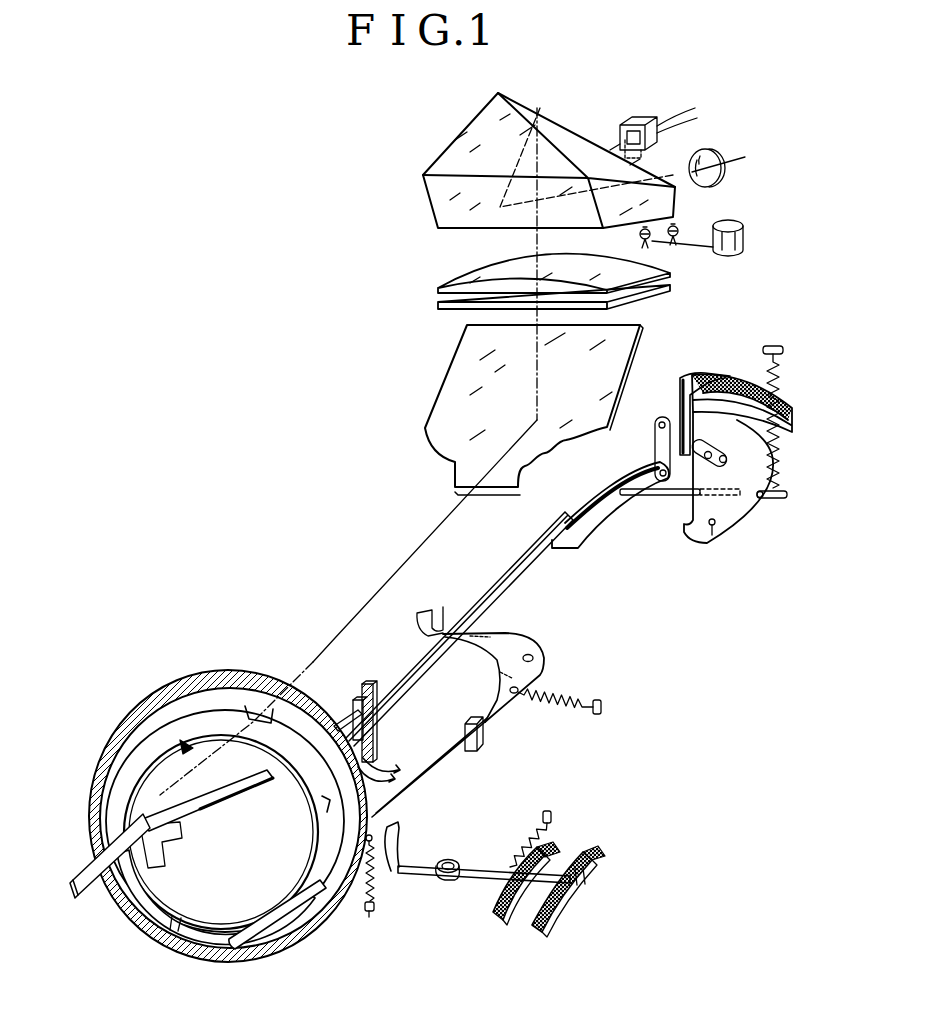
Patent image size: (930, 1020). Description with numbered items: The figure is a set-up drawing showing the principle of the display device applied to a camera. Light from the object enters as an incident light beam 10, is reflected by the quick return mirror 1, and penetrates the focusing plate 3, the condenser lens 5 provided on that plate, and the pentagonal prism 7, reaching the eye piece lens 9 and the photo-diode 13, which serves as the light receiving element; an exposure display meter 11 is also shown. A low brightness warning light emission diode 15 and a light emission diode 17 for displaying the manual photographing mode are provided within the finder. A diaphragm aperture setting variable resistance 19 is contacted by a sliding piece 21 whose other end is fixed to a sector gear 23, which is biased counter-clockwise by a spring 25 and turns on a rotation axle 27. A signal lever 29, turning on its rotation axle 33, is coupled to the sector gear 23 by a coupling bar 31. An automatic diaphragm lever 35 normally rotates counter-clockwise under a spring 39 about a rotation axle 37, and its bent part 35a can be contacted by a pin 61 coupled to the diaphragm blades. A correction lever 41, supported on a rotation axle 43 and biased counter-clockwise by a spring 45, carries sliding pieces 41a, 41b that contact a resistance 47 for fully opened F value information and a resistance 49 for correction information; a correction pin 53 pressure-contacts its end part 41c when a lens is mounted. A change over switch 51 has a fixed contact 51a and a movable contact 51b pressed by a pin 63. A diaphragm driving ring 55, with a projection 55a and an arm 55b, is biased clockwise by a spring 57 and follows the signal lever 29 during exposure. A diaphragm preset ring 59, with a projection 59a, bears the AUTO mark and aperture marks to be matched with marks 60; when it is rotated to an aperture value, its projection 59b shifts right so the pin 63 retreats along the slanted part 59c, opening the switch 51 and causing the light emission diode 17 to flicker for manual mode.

The quick return mirror 1 is at (455, 385).
The focusing plate 3 is at (438, 305).
The condenser lens 5 is at (438, 290).
The pentagonal prism 7 is at (438, 198).
The eye piece lens 9 is at (707, 150).
The incident light beam 10 is at (738, 158).
The exposure display meter 11 is at (735, 228).
The photo-diode 13 is at (621, 126).
The low brightness warning light emission diode 15 is at (678, 229).
The manual mode light emission diode 17 is at (650, 243).
The diaphragm aperture setting variable resistance 19 is at (738, 376).
The sliding piece 21 is at (693, 378).
The sector gear 23 is at (740, 505).
The spring 25 is at (778, 445).
The rotation axle 27 is at (712, 530).
The signal lever 29 is at (603, 512).
The coupling bar 31 is at (652, 496).
The rotation axle 33 is at (655, 427).
The automatic diaphragm lever 35 is at (507, 702).
The bent part 35a is at (483, 744).
The rotation axle 37 is at (529, 654).
The spring 39 is at (570, 696).
The correction lever 41 is at (479, 866).
The sliding piece 41a is at (510, 870).
The sliding piece 41b is at (585, 880).
The end part 41c is at (400, 838).
The rotation axle 43 is at (449, 858).
The spring 45 is at (524, 842).
The resistance 47 is at (556, 846).
The resistance 49 is at (592, 856).
The change over switch 51 is at (373, 758).
The fixed contact 51a is at (372, 688).
The movable contact 51b is at (358, 700).
The correction pin 53 is at (374, 858).
The diaphragm driving ring 55 is at (193, 690).
The projection 55a is at (268, 708).
The arm 55b is at (500, 585).
The spring 57 is at (366, 908).
The diaphragm preset ring 59 is at (322, 902).
The projection 59a is at (300, 812).
The projection 59b is at (165, 925).
The slanted part 59c is at (145, 865).
The marks 60 is at (188, 752).
The pin 61 is at (440, 760).
The pin 63 is at (340, 722).